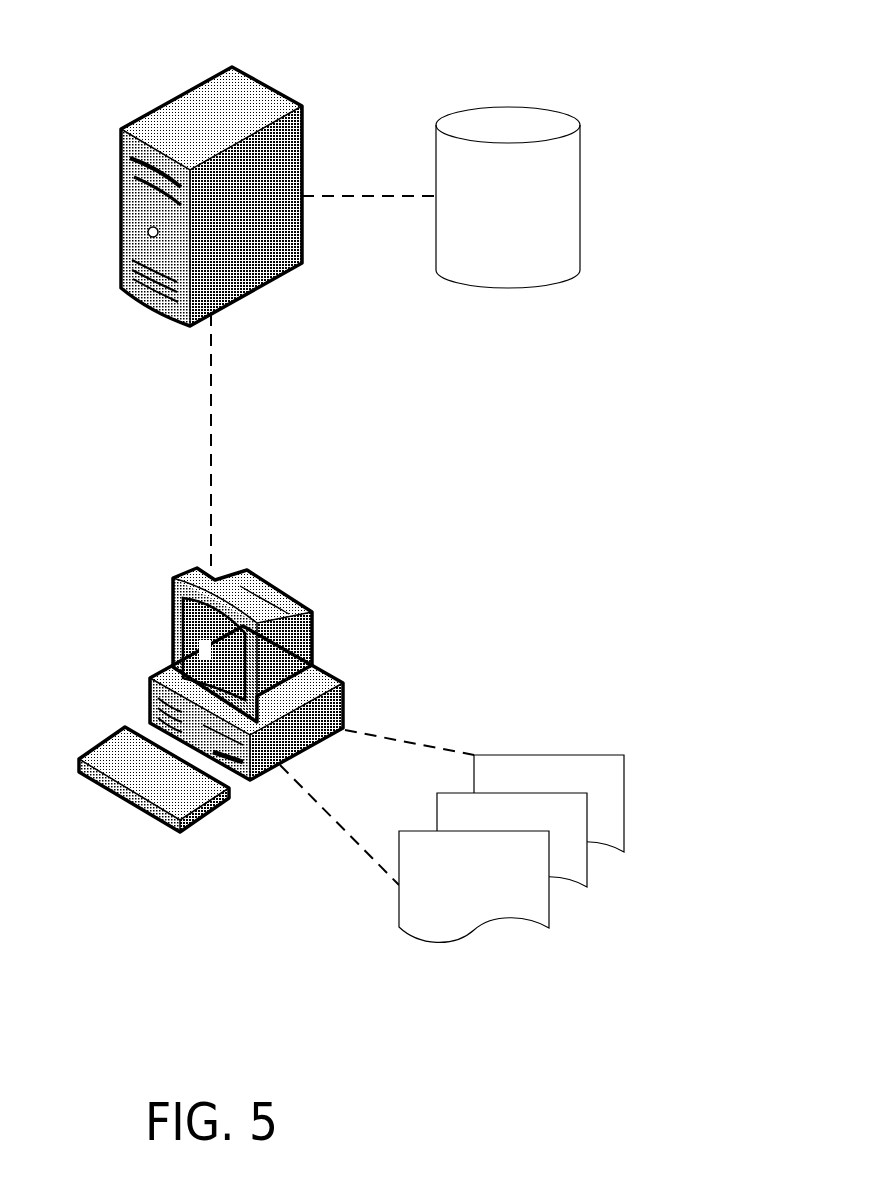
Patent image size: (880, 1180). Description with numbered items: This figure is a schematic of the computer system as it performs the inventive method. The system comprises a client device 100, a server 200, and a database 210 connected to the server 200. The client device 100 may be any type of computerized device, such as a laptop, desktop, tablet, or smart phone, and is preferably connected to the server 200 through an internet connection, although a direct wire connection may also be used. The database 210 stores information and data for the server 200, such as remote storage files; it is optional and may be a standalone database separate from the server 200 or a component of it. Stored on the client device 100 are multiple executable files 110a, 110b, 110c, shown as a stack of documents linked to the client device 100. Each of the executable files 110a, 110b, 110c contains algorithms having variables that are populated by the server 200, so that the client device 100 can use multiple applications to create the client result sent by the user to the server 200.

The server 200 is at (302, 122).
The database 210 is at (578, 161).
The client device 100 is at (313, 658).
The executable file 110a is at (549, 911).
The executable file 110b is at (588, 887).
The executable file 110c is at (625, 775).